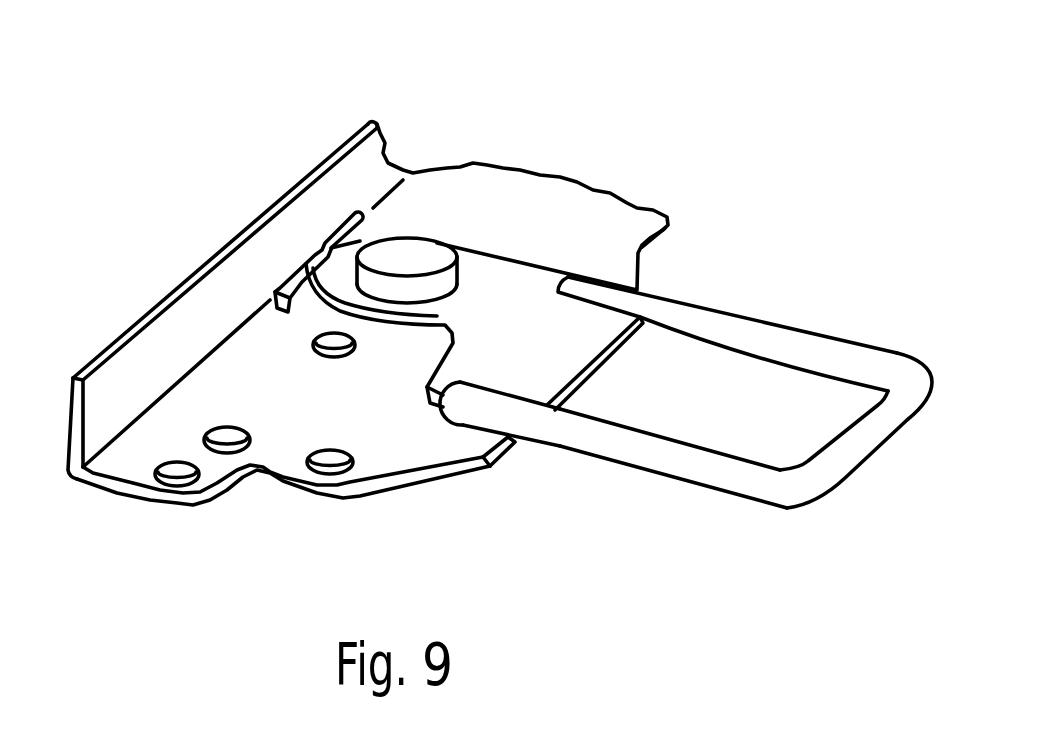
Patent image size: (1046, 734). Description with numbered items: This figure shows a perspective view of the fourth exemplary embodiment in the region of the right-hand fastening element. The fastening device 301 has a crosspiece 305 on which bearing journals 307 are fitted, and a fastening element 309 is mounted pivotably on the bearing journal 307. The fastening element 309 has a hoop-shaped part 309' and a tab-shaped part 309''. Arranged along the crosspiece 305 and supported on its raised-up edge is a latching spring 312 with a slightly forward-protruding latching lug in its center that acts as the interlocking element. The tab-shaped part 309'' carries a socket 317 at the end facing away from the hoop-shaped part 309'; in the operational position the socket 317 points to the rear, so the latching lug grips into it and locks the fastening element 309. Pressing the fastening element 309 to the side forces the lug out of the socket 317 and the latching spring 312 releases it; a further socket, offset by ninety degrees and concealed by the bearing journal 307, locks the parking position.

The fastening device 301 is at (238, 169).
The crosspiece 305 is at (572, 224).
The bearing journal 307 is at (408, 258).
The fastening element 309 is at (745, 352).
The hoop-shaped part 309' is at (673, 518).
The tab-shaped part 309'' is at (500, 464).
The latching spring 312 is at (280, 283).
The socket 317 is at (400, 240).